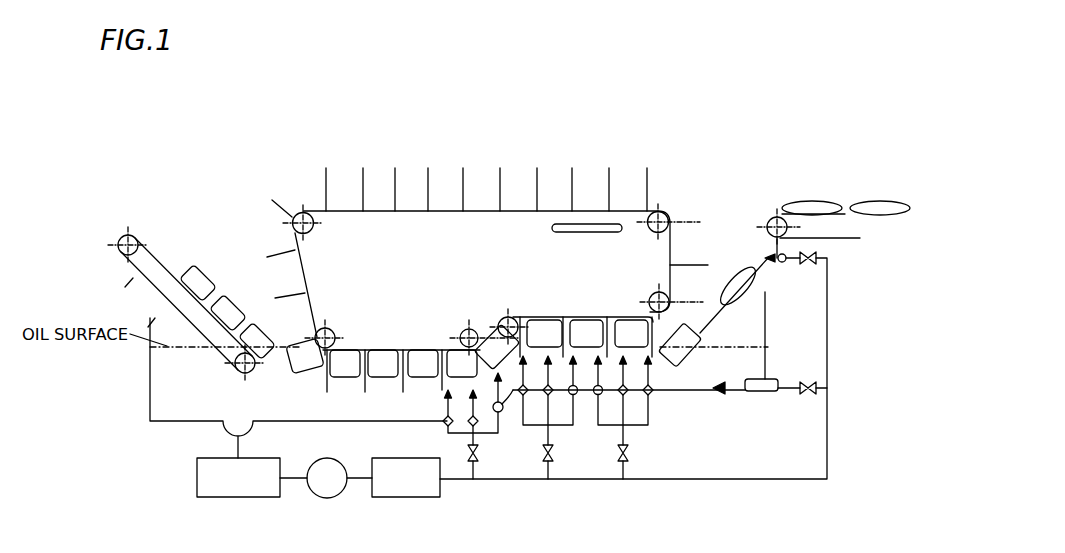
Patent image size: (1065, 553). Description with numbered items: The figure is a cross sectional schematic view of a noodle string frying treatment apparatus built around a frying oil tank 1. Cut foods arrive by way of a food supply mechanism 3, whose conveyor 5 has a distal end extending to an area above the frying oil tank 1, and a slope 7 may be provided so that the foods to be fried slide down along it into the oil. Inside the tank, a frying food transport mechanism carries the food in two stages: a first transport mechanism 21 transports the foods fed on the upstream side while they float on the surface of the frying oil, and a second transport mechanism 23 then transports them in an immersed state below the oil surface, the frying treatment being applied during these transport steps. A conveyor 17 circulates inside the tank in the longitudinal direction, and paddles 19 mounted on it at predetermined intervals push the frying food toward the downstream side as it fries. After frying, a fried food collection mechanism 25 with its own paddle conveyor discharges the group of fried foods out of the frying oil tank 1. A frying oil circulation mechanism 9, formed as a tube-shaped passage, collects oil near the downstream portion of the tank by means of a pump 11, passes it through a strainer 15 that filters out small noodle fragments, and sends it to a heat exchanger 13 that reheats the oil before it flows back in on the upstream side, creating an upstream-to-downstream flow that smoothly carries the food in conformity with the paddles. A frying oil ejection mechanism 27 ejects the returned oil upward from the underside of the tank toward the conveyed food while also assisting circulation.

The frying oil tank 1 is at (673, 393).
The food supply mechanism 3 is at (810, 192).
The conveyor 5 is at (770, 215).
The slope 7 is at (767, 270).
The frying oil circulation mechanism 9 is at (707, 480).
The pump 11 is at (322, 498).
The heat exchanger 13 is at (402, 498).
The strainer 15 is at (237, 498).
The conveyor 17 is at (317, 208).
The paddles 19 is at (465, 173).
The first transport mechanism 21 is at (640, 304).
The second transport mechanism 23 is at (480, 320).
The fried food collection mechanism 25 is at (160, 227).
The frying oil ejection mechanism 27 is at (650, 427).